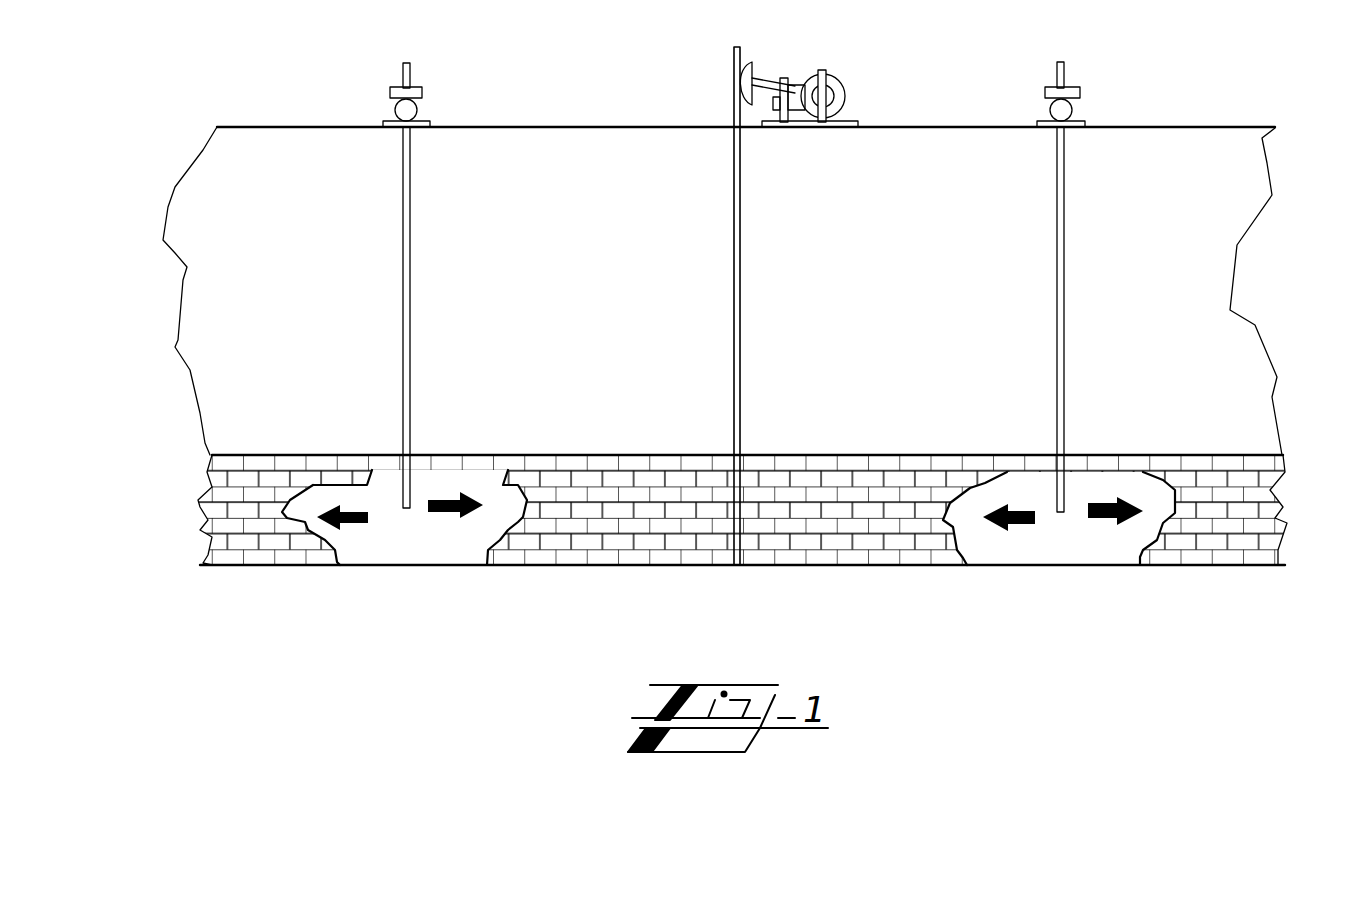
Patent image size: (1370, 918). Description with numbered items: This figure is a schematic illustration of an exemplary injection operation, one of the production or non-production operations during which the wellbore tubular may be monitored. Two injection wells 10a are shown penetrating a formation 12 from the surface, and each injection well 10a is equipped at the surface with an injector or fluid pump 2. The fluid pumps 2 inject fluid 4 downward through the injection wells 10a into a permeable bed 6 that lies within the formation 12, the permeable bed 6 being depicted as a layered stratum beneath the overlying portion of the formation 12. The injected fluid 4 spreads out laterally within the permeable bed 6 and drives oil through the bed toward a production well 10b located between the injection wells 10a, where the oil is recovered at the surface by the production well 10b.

The fluid pump 2 is at (443, 107).
The fluid 4 is at (480, 486).
The permeable bed 6 is at (620, 455).
The injection well 10a is at (388, 303).
The production well 10b is at (712, 243).
The formation 12 is at (925, 276).